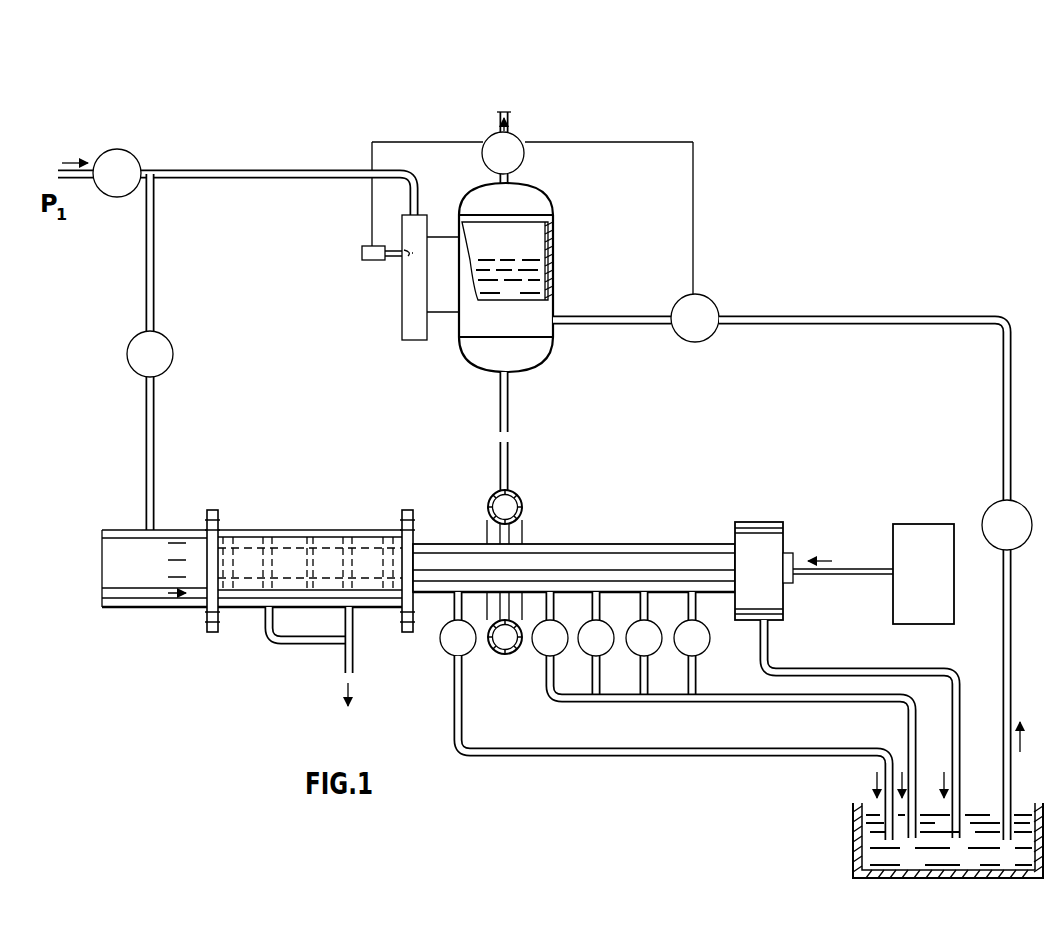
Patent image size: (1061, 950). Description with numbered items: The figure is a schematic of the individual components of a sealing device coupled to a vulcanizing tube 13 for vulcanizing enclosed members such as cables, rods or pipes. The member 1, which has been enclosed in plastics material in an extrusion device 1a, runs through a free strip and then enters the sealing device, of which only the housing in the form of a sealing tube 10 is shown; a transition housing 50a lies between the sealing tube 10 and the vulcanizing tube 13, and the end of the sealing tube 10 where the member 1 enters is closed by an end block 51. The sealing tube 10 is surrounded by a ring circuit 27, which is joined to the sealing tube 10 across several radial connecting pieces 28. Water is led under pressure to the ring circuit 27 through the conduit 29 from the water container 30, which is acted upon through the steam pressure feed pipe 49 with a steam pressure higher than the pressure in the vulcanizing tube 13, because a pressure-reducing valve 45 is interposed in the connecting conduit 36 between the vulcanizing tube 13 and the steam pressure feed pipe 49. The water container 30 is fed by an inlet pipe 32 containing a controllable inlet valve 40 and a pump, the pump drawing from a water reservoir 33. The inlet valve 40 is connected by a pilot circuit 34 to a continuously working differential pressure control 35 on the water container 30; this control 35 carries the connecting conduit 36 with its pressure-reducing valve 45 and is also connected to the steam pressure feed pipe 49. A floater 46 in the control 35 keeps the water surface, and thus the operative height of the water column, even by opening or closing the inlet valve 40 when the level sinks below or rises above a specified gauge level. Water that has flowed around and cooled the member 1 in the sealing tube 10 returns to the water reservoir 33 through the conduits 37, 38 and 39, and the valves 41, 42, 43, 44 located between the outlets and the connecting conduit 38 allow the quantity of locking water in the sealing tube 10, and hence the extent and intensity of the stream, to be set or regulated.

The member 1 is at (848, 569).
The extrusion device 1a is at (912, 524).
The sealing tube 10 is at (620, 542).
The vulcanizing tube 13 is at (125, 607).
The ring circuit 27 is at (488, 500).
The radial connecting pieces 28 is at (522, 528).
The conduit 29 is at (509, 406).
The water container 30 is at (463, 188).
The return pipe 32 is at (1003, 398).
The water reservoir 33 is at (853, 852).
The pilot circuit 34 is at (693, 222).
The differential pressure control 35 is at (388, 280).
The connecting conduit 36 is at (146, 277).
The conduit 37 is at (577, 758).
The connecting conduit 38 is at (850, 698).
The conduit 39 is at (857, 668).
The inlet valve 40 is at (696, 343).
The valve 41 is at (558, 650).
The valve 42 is at (606, 650).
The valve 43 is at (654, 650).
The valve 44 is at (702, 650).
The pressure-reducing valve 45 is at (128, 352).
The floater 46 is at (362, 253).
The steam pressure feed pipe 49 is at (150, 170).
The transition housing 50a is at (286, 526).
The end block 51 is at (760, 522).